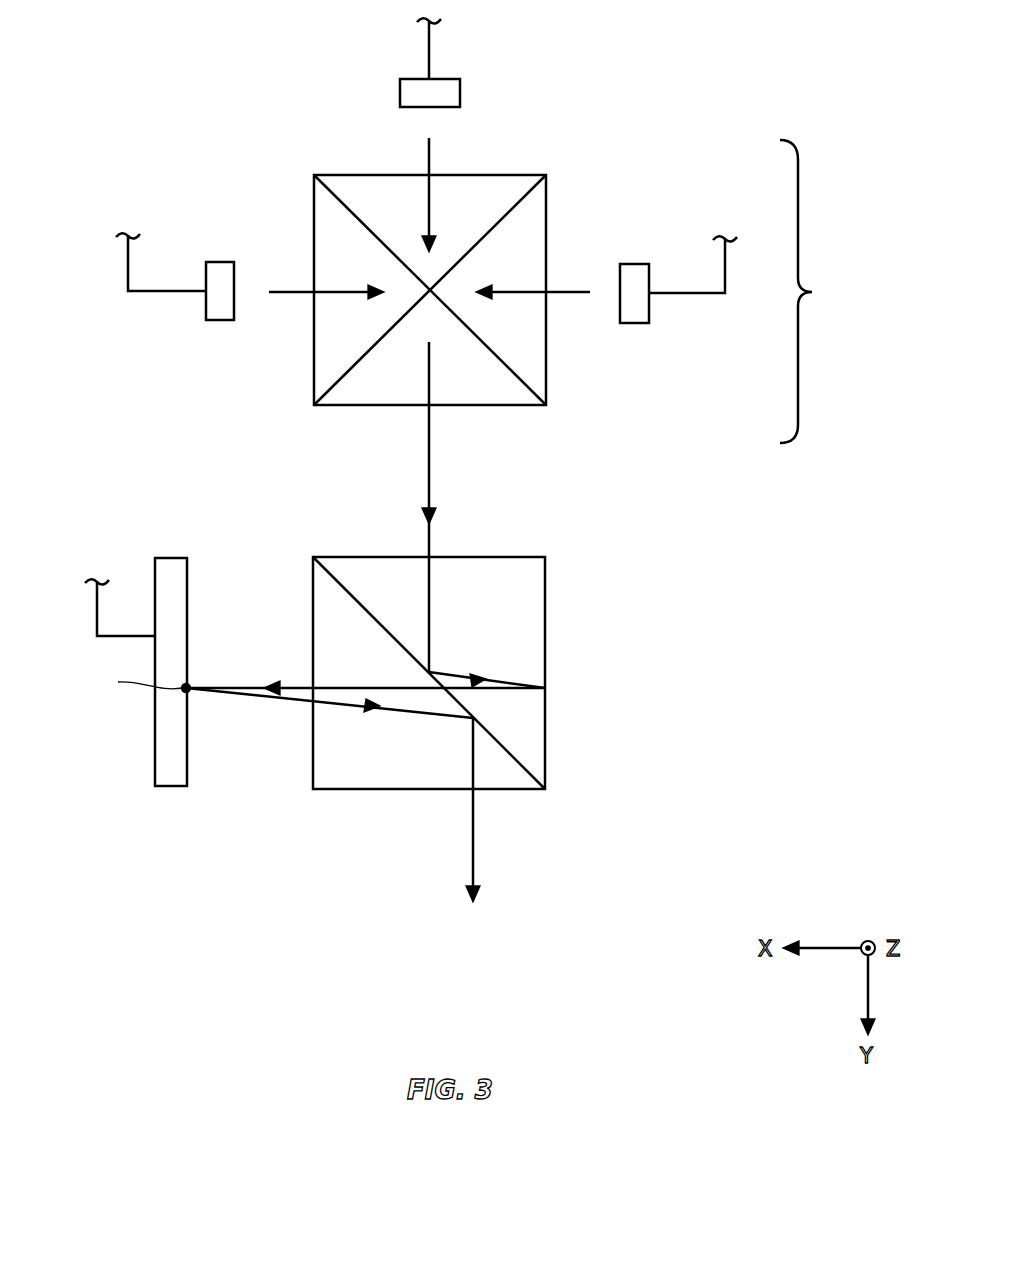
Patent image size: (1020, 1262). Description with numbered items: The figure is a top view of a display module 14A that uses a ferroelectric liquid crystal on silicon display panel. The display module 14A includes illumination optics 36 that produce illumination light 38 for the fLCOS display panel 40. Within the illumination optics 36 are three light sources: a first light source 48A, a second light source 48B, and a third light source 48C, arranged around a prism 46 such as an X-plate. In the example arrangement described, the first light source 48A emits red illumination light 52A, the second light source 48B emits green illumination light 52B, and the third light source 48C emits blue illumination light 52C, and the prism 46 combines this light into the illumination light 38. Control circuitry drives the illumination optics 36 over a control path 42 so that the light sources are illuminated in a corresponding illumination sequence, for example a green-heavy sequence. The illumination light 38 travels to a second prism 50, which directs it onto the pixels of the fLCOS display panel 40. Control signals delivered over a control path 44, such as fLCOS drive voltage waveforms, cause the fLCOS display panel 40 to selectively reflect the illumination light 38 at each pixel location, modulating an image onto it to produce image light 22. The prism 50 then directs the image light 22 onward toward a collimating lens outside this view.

The display module 14A is at (592, 893).
The image light 22 is at (476, 852).
The illumination optics 36 is at (811, 291).
The illumination light 38 is at (432, 466).
The fLCOS display panel 40 is at (175, 556).
The control path 42 is at (432, 52).
The control path 44 is at (96, 616).
The prism 46 is at (546, 175).
The first light source 48A is at (222, 236).
The second light source 48B is at (368, 98).
The third light source 48C is at (636, 240).
The prism 50 is at (537, 556).
The red illumination light 52A is at (332, 296).
The green illumination light 52B is at (427, 200).
The blue illumination light 52C is at (518, 297).